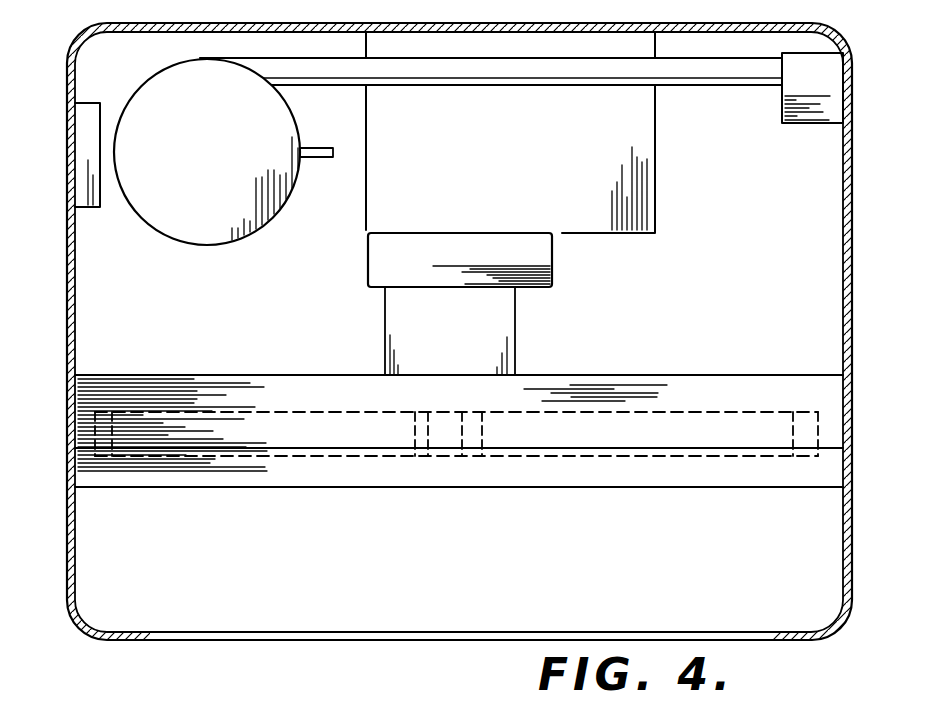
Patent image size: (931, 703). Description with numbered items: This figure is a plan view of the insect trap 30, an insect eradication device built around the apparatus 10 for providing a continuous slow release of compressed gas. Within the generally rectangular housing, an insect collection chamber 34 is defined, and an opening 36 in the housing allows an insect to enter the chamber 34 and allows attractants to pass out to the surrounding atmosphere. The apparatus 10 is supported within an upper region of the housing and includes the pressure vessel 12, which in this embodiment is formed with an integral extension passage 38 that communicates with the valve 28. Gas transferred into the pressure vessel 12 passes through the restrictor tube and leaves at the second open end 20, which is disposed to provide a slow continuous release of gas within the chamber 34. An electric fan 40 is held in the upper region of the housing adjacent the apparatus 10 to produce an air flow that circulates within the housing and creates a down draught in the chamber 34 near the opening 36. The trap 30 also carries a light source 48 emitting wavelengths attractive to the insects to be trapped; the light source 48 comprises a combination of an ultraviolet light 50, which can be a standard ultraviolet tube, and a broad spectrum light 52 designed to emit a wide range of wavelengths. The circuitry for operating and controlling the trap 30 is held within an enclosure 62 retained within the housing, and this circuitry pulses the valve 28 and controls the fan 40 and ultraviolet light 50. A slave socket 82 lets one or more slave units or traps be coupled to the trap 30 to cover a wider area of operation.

The apparatus 10 is at (190, 247).
The pressure vessel 12 is at (223, 250).
The second open end 20 is at (337, 152).
The valve 28 is at (833, 80).
The insect trap 30 is at (856, 315).
The insect collection chamber 34 is at (486, 587).
The opening 36 is at (412, 618).
The extension passage 38 is at (480, 75).
The electric fan 40 is at (456, 258).
The light source 48 is at (692, 392).
The ultraviolet light 50 is at (297, 440).
The broad spectrum light 52 is at (598, 432).
The enclosure 62 is at (630, 198).
The slave socket 82 is at (87, 162).